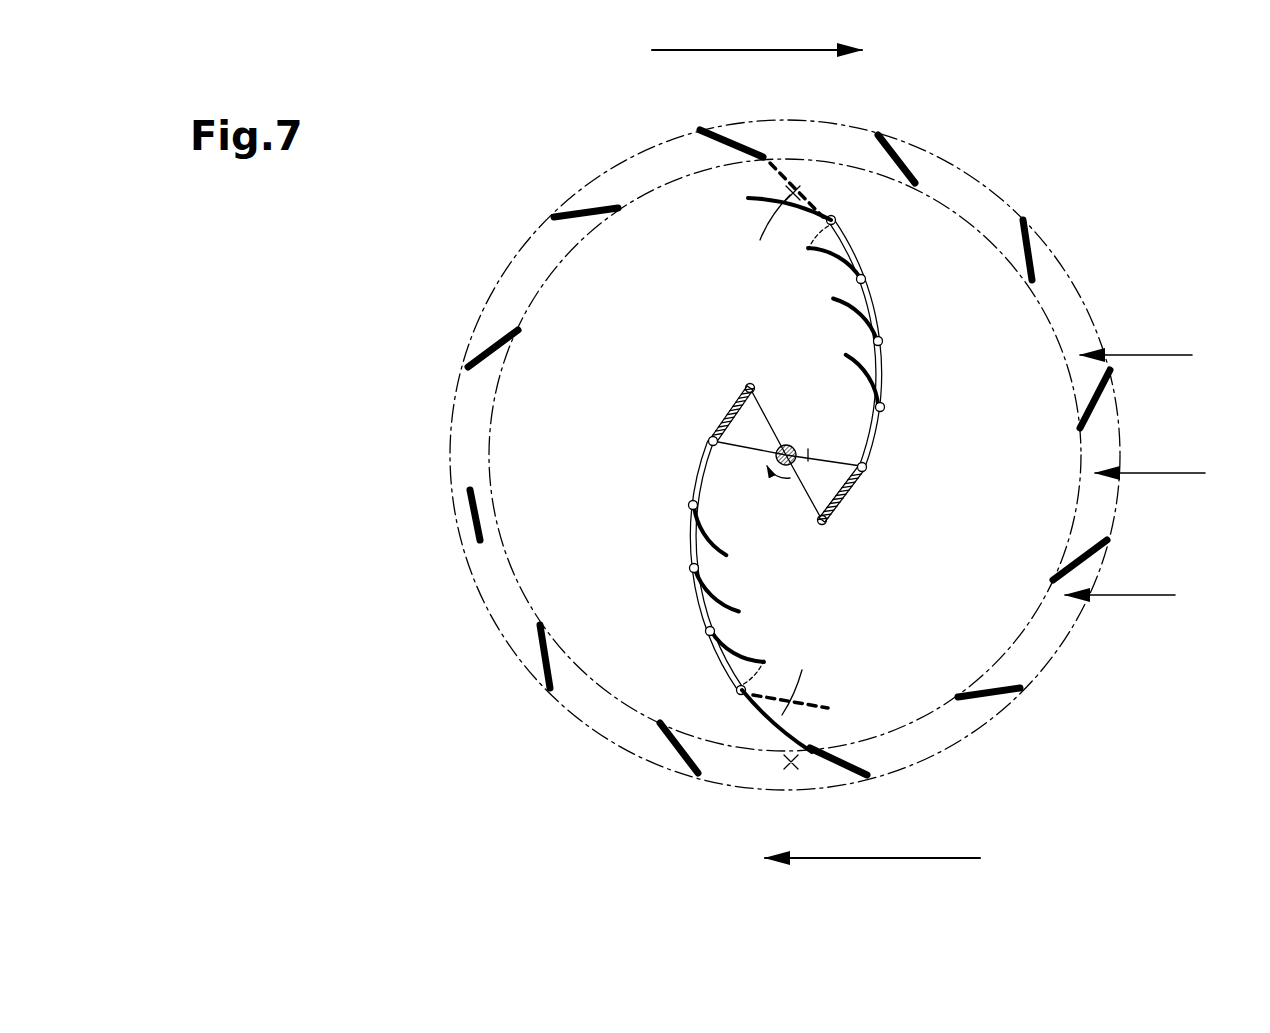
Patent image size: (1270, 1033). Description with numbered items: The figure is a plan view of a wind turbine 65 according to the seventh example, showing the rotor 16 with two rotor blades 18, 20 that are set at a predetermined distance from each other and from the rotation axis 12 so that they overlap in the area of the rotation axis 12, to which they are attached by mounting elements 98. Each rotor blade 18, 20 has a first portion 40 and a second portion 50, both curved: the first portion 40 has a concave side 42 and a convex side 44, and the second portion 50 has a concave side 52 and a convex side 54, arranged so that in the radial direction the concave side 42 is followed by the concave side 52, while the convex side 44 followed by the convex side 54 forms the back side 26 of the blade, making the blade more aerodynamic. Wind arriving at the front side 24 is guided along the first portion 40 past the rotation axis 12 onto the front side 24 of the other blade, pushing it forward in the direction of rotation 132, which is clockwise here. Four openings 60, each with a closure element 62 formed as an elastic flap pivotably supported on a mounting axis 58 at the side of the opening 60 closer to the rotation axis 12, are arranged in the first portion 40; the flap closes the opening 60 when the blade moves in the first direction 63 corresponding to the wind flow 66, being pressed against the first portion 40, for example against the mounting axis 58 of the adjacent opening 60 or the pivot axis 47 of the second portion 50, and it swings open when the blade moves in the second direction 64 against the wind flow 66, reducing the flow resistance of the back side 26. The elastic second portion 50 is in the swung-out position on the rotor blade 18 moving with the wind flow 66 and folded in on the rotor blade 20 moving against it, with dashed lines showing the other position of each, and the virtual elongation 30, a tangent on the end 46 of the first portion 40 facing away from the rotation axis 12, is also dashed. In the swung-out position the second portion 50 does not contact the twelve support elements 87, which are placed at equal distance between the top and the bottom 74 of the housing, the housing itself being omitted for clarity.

The rotation axis 12 is at (790, 440).
The rotor 16 is at (926, 570).
The rotor blade 18 is at (668, 578).
The rotor blade 20 is at (798, 451).
The front side 24 is at (725, 643).
The back side 26 is at (698, 473).
The virtual elongation 30 is at (778, 150).
The first portion 40 is at (897, 373).
The concave side 42 is at (855, 292).
The convex side 44 is at (853, 250).
The end of the first portion 46 is at (725, 687).
The pivot axis 47 is at (838, 220).
The second portion 50 is at (748, 208).
The concave side 52 is at (806, 205).
The convex side 54 is at (798, 192).
The mounting axis 58 is at (867, 280).
The opening 60 is at (884, 313).
The closure element 62 is at (829, 256).
The first direction 63 is at (900, 850).
The second direction 64 is at (688, 52).
The wind turbine 65 is at (1068, 186).
The wind flow 66 is at (1165, 353).
The bottom 74 is at (585, 722).
The support element 87 is at (740, 140).
The mounting element 98 is at (776, 410).
The direction of rotation 132 is at (782, 476).